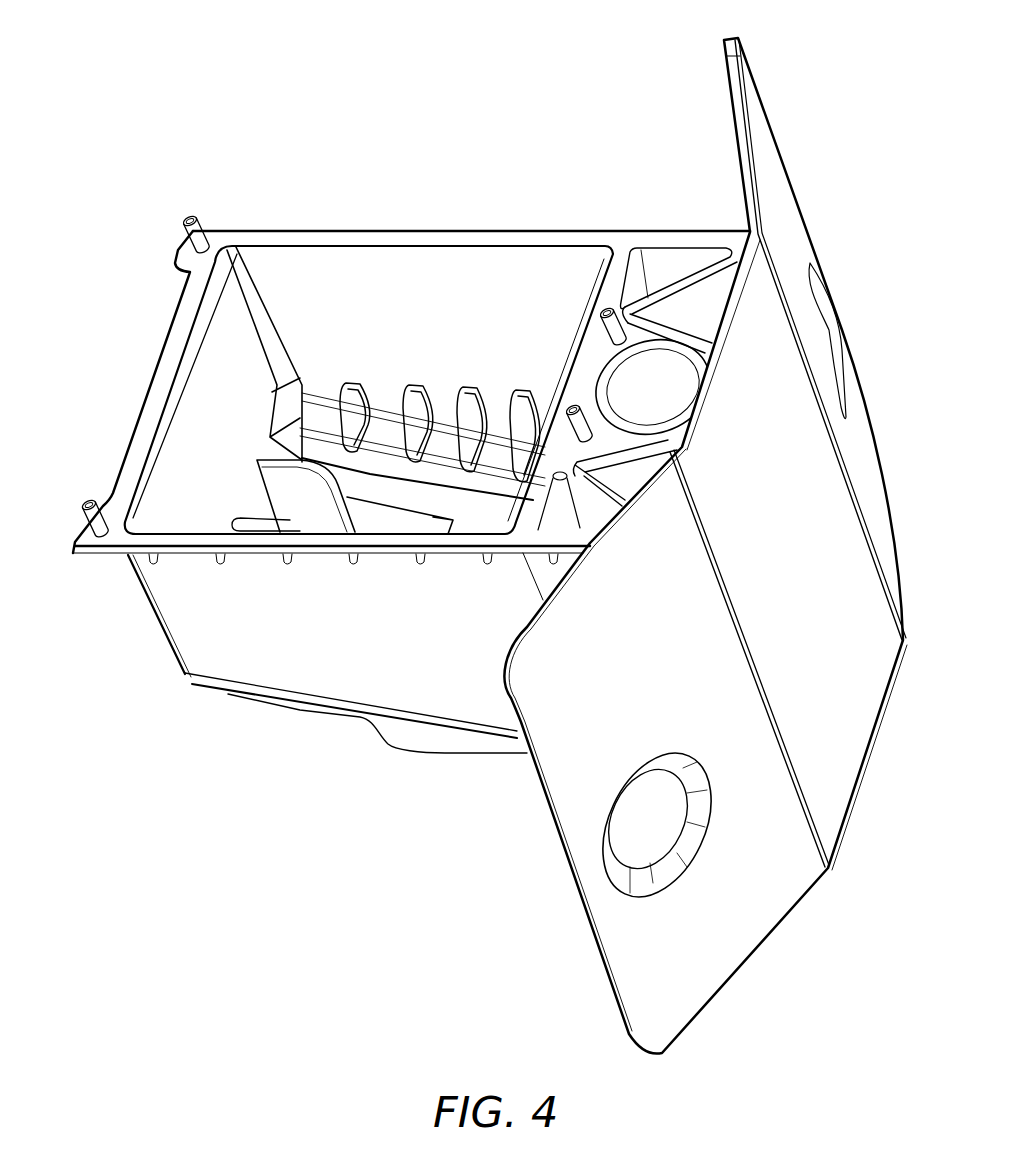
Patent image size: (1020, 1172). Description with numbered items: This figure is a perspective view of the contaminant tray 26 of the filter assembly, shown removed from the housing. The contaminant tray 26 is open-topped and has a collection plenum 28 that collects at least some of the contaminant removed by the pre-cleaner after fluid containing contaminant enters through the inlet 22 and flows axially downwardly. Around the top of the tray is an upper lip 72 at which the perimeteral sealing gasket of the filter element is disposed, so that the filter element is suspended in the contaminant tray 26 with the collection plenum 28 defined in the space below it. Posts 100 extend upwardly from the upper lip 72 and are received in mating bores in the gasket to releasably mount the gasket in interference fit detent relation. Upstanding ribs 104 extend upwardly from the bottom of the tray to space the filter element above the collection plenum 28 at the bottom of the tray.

The inlet 22 is at (656, 402).
The contaminant tray 26 is at (185, 675).
The collection plenum 28 is at (200, 440).
The upper lip 72 is at (399, 231).
The post 100 is at (207, 223).
The upstanding rib 104 is at (416, 395).